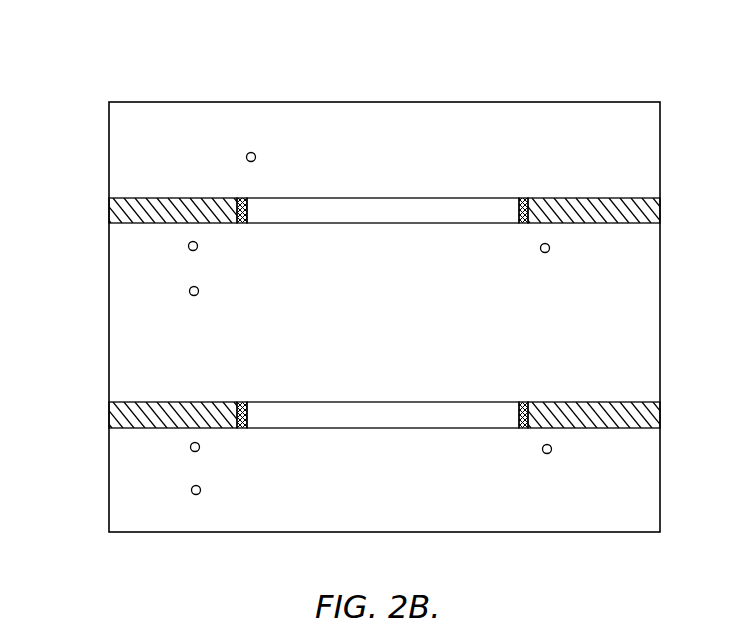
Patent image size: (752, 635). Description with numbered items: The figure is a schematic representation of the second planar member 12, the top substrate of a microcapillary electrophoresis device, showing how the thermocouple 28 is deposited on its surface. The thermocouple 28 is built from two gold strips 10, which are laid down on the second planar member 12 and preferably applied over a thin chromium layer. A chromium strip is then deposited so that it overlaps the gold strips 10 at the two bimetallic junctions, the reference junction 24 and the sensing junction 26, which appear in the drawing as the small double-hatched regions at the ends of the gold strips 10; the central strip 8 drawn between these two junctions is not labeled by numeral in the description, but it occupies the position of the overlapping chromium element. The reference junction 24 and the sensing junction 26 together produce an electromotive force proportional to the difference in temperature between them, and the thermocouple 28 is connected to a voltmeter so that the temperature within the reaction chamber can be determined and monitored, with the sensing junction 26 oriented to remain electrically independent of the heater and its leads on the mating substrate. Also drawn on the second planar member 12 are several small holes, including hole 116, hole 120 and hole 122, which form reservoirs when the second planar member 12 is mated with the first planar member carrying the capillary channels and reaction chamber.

The second planar member 12 is at (84, 77).
The gold strips 10 is at (168, 198).
The optical fiber 8 is at (371, 198).
The thermocouple 28 is at (655, 396).
The sensing junction 26 is at (239, 223).
The reference junction 24 is at (523, 200).
The hole 120 is at (255, 153).
The hole 116 is at (188, 248).
The hole 122 is at (550, 247).